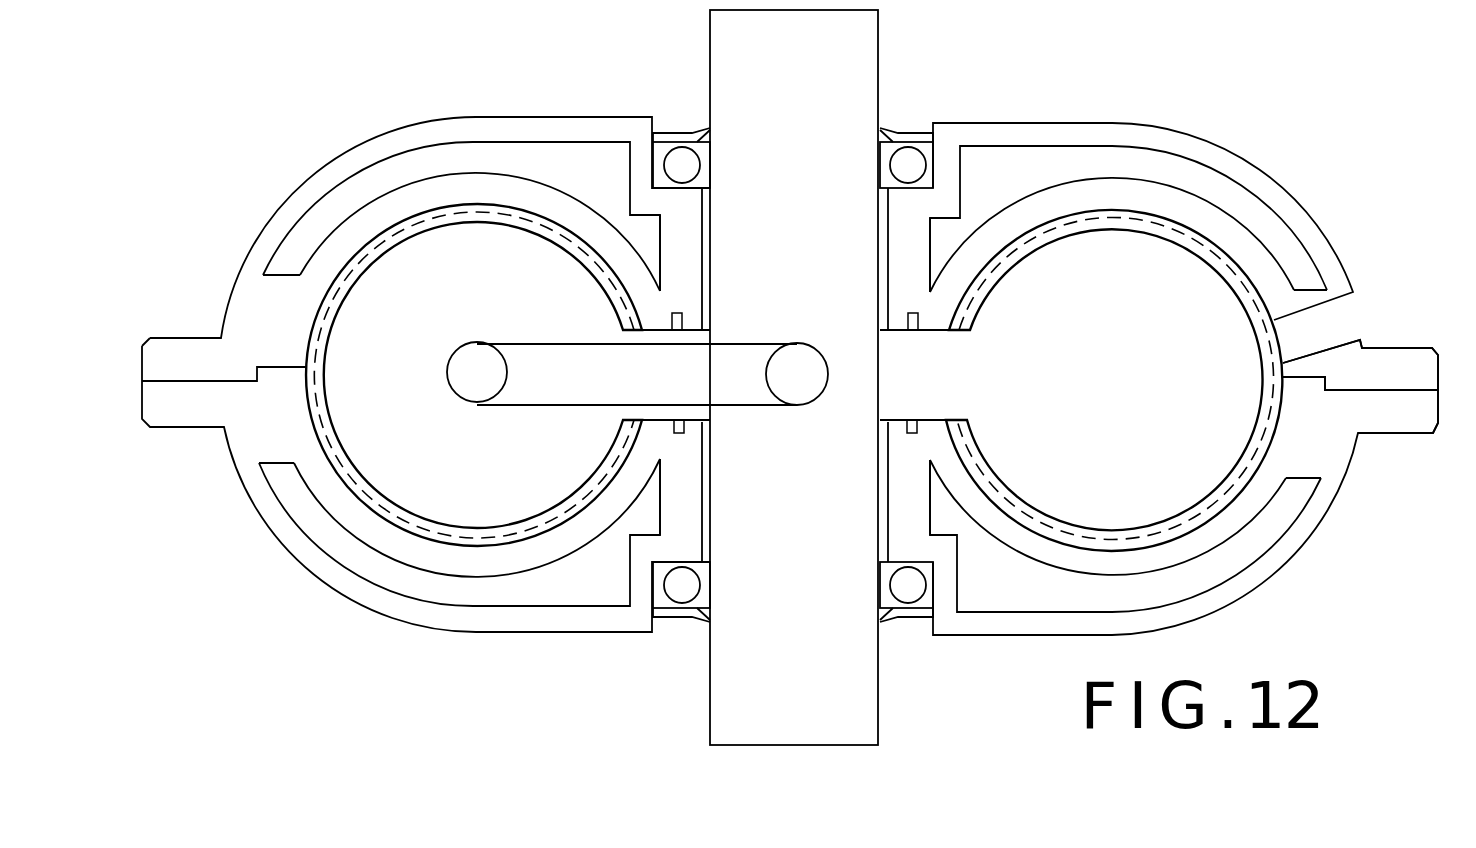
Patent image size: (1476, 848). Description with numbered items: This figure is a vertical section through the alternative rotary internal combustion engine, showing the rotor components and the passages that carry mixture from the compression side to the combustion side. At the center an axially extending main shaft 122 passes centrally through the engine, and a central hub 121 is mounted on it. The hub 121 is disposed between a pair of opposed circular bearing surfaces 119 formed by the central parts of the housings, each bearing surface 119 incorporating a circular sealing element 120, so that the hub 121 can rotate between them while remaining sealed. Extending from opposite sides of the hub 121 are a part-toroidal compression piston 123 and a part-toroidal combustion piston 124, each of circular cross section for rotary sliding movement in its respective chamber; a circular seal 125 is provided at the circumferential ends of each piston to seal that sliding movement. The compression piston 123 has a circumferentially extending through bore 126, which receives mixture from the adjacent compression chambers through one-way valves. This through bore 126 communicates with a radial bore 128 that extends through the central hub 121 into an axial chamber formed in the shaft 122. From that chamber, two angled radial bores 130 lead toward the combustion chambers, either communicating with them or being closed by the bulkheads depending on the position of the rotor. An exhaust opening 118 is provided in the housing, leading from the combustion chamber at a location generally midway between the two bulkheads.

The exhaust opening 118 is at (1333, 323).
The bearing surfaces 119 is at (942, 318).
The circular sealing element 120 is at (913, 334).
The central hub 121 is at (712, 298).
The main shaft 122 is at (757, 68).
The compression piston 123 is at (470, 299).
The combustion piston 124 is at (1085, 323).
The circular seal 125 is at (455, 207).
The through bore 126 is at (477, 360).
The radial bore 128 is at (637, 374).
The angled radial bores 130 is at (780, 387).